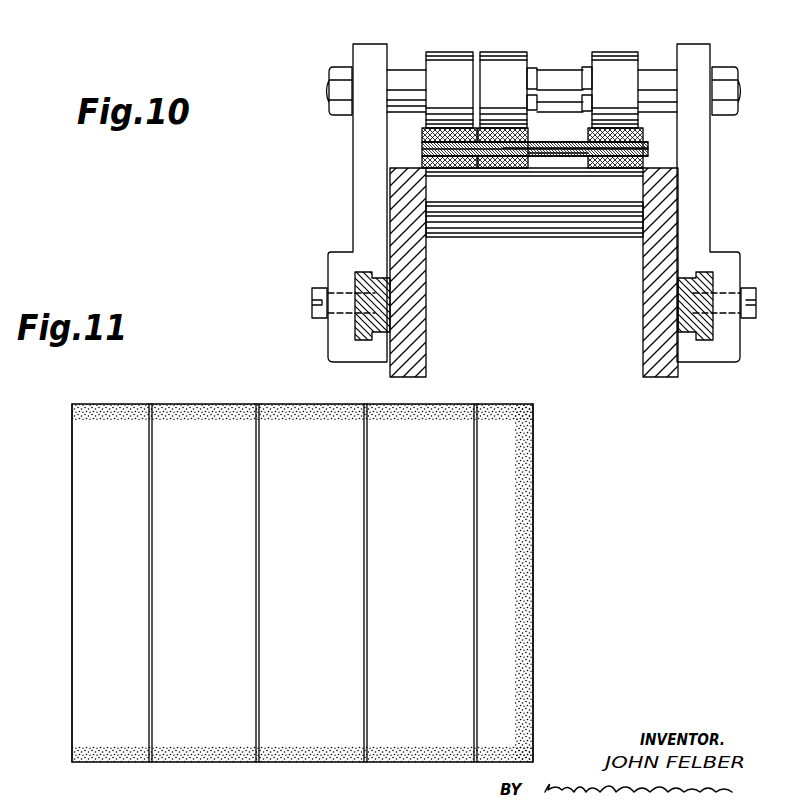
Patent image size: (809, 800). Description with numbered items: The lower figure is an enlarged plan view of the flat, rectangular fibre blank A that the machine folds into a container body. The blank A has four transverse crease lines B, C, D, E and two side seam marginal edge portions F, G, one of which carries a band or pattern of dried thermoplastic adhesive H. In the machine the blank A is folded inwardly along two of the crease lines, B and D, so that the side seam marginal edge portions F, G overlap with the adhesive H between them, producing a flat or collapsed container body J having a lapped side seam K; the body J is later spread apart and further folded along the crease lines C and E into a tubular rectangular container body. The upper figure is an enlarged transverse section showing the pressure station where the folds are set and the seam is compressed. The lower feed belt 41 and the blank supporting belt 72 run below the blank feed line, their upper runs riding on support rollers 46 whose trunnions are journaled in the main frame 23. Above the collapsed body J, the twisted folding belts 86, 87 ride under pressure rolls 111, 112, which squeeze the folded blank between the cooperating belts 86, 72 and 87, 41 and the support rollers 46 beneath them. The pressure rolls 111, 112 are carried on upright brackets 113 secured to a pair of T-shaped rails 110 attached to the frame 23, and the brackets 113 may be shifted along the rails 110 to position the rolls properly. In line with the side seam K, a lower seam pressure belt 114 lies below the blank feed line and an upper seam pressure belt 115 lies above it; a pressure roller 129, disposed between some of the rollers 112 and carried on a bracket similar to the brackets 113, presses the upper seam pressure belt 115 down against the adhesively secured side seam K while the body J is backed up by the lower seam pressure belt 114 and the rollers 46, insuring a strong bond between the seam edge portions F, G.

In FIG. 10, the pressure roll 112 is at (449, 61).
In FIG. 10, the pressure roller 129 is at (504, 60).
In FIG. 10, the pressure roll 111 is at (610, 62).
In FIG. 10, the upper seam pressure belt 115 is at (528, 128).
In FIG. 10, the folding belt 86 is at (597, 133).
In FIG. 10, the folding belt 87 is at (433, 128).
In FIG. 10, the lower feed belt 41 is at (447, 165).
In FIG. 10, the lower seam pressure belt 114 is at (500, 160).
In FIG. 10, the endless belt 72 is at (623, 163).
In FIG. 10, the support roller 46 is at (594, 217).
In FIG. 10, the frame 23 is at (410, 339).
In FIG. 10, the upright bracket 113 is at (367, 207).
In FIG. 10, the T-shaped rail 110 is at (360, 325).
In FIG. 10, the lapped side seam K is at (503, 163).
In FIG. 10, the collapsed container body J is at (555, 158).
In FIG. 10, the side seam marginal edge portion F is at (546, 142).
In FIG. 11, the side seam marginal edge portion F is at (535, 553).
In FIG. 10, the side seam marginal edge portion G is at (420, 147).
In FIG. 11, the side seam marginal edge portion G is at (72, 555).
In FIG. 10, the transverse crease line B is at (420, 151).
In FIG. 11, the transverse crease line B is at (152, 552).
In FIG. 10, the transverse crease line D is at (645, 148).
In FIG. 11, the transverse crease line D is at (368, 573).
In FIG. 11, the blank A is at (199, 428).
In FIG. 11, the transverse crease line C is at (258, 573).
In FIG. 11, the transverse crease line E is at (477, 553).
In FIG. 11, the thermoplastic adhesive H is at (527, 618).